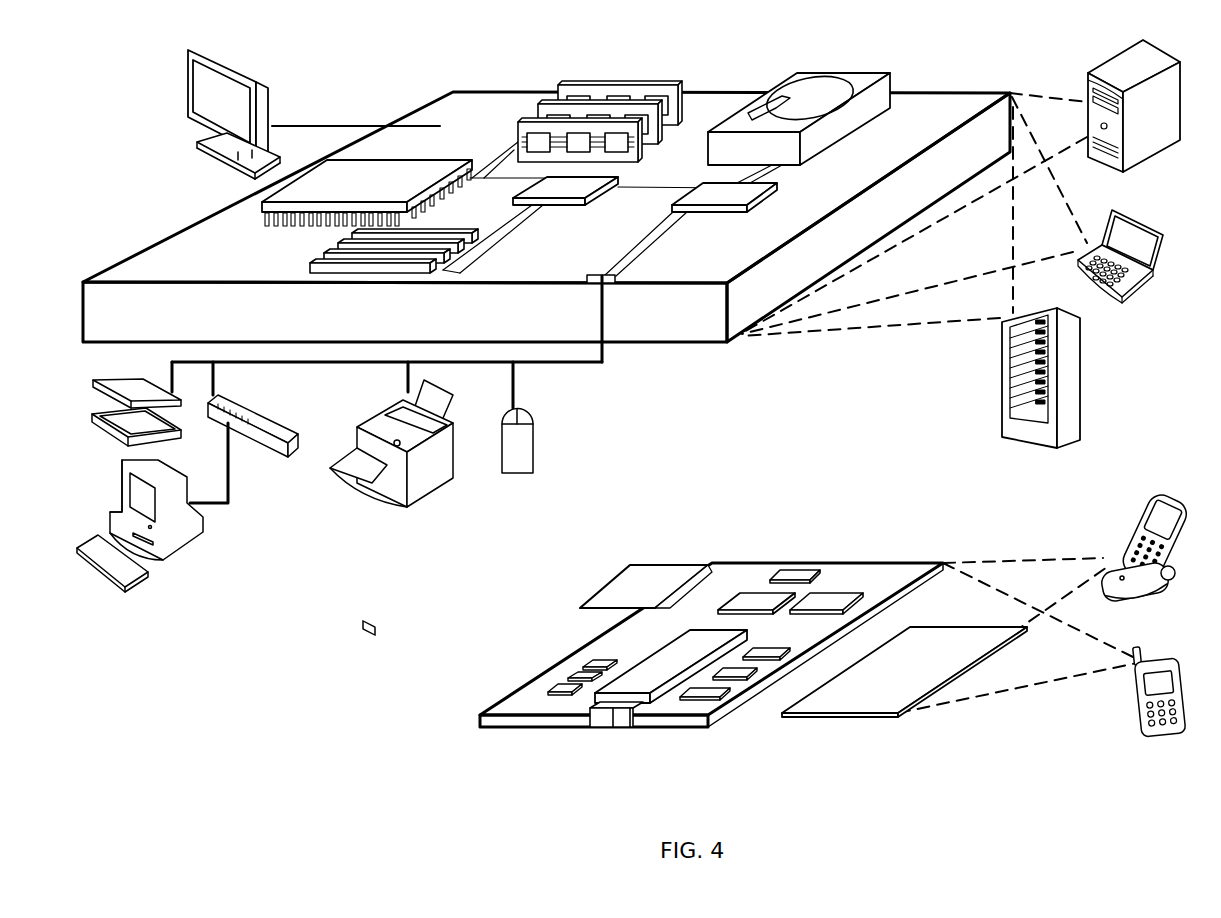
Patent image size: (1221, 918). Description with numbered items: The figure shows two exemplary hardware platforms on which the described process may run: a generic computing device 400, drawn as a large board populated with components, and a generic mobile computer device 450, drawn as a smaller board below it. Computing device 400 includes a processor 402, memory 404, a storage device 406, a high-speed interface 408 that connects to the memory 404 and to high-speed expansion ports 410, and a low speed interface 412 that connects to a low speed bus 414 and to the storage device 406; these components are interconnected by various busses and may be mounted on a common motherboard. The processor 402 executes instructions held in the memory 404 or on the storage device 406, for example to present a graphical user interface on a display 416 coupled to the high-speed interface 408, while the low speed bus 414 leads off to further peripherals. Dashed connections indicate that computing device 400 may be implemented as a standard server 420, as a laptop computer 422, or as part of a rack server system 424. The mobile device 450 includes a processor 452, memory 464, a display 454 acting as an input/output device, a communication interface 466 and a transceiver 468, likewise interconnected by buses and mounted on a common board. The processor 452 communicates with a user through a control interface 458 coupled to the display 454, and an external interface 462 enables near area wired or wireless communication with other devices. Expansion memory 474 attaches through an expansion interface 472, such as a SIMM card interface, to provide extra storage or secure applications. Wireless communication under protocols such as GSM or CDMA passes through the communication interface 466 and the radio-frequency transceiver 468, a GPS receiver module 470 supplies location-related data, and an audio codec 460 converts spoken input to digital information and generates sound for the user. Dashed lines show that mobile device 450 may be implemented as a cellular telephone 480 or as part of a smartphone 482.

The computing device 400 is at (380, 64).
The processor 402 is at (257, 210).
The memory 404 is at (584, 87).
The storage device 406 is at (793, 77).
The high-speed interface 408 is at (540, 190).
The high-speed expansion ports 410 is at (333, 250).
The low speed interface 412 is at (714, 188).
The low speed bus 414 is at (607, 280).
The display 416 is at (188, 52).
The standard server 420 is at (1088, 78).
The laptop computer 422 is at (1112, 212).
The rack server system 424 is at (1000, 400).
The mobile computer device 450 is at (686, 538).
The processor 452 is at (650, 697).
The display 454 is at (898, 715).
The control interface 458 is at (747, 680).
The audio codec 460 is at (765, 658).
The external interface 462 is at (613, 728).
The memory 464 is at (572, 682).
The communication interface 466 is at (757, 600).
The transceiver 468 is at (833, 598).
The GPS receiver module 470 is at (796, 568).
The expansion interface 472 is at (685, 576).
The expansion memory 474 is at (625, 577).
The cellular telephone 480 is at (1157, 512).
The smartphone 482 is at (1145, 640).